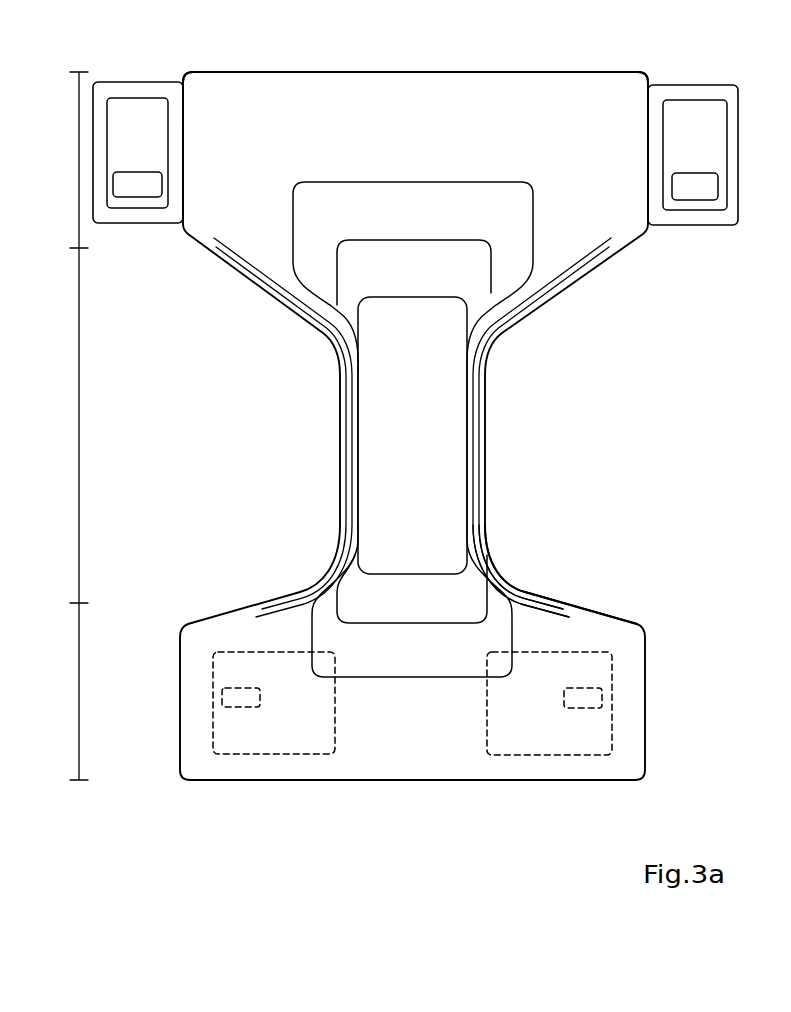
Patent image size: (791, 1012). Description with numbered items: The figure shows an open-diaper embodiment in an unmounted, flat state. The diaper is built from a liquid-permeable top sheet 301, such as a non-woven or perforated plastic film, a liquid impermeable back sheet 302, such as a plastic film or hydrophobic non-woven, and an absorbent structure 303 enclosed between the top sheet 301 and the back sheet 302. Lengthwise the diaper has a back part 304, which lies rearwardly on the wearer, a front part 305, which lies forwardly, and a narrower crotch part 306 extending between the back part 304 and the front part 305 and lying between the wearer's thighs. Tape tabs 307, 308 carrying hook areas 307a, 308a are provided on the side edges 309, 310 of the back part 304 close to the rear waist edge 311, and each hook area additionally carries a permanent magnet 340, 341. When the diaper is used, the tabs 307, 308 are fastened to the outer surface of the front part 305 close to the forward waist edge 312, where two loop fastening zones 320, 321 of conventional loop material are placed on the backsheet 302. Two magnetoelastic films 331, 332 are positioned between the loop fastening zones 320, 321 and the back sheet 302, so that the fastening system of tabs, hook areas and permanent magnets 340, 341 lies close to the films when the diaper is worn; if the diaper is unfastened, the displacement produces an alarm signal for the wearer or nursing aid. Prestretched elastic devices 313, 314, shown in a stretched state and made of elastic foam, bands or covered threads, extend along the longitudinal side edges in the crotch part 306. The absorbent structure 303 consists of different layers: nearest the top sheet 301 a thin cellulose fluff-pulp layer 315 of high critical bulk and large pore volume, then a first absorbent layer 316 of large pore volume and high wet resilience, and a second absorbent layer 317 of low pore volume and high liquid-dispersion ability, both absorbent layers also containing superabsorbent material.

The liquid-permeable top sheet 301 is at (510, 292).
The liquid impermeable back sheet 302 is at (518, 259).
The absorbent structure 303 is at (430, 472).
The back part 304 is at (58, 160).
The front part 305 is at (58, 691).
The crotch part 306 is at (57, 425).
The tape tab 307 is at (148, 90).
The hook area 307a is at (130, 110).
The tape tab 308 is at (677, 95).
The hook area 308a is at (698, 115).
The side edge 309 is at (183, 118).
The side edge 310 is at (645, 113).
The rear waist edge 311 is at (398, 72).
The forward waist edge 312 is at (415, 780).
The elastic device 313 is at (350, 405).
The elastic device 314 is at (478, 403).
The cellulose fluff-pulp layer 315 is at (443, 550).
The first absorbent layer 316 is at (458, 597).
The second absorbent layer 317 is at (490, 630).
The loop fastening zone 320 is at (278, 737).
The loop fastening zone 321 is at (568, 737).
The magnetoelastic film 331 is at (220, 697).
The magnetoelastic film 332 is at (604, 690).
The permanent magnet 340 is at (138, 185).
The permanent magnet 341 is at (693, 187).